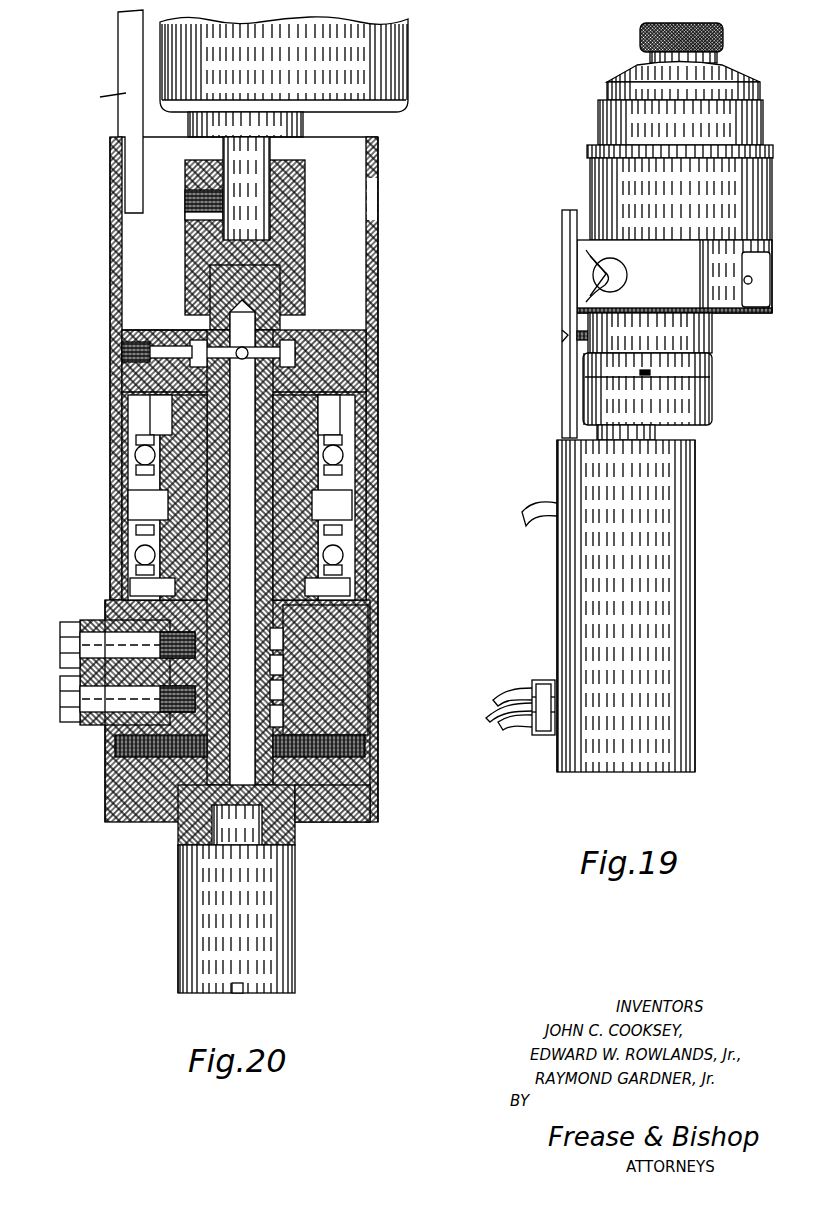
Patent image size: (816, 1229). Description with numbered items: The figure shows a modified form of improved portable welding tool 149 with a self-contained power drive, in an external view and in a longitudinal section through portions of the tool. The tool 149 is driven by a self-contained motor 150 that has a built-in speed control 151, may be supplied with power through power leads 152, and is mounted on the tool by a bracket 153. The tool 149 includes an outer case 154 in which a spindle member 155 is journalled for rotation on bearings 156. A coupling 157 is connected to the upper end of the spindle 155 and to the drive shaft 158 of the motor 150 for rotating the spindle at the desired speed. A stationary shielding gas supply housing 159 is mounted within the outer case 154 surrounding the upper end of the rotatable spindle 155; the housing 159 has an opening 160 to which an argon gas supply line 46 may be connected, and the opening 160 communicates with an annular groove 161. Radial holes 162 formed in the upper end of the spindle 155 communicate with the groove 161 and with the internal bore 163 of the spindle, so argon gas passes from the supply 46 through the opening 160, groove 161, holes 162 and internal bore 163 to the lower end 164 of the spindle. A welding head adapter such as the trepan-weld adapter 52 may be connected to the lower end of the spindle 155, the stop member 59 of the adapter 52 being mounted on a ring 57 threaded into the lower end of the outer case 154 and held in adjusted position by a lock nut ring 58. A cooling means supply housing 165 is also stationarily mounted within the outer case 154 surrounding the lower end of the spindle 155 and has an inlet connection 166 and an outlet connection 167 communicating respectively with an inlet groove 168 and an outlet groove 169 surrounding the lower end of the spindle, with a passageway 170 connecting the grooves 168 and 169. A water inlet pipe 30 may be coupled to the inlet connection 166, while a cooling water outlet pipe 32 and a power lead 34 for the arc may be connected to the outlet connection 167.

In FIG. 20, the welding tool 149 is at (382, 493).
In FIG. 19, the welding tool 149 is at (698, 527).
In FIG. 20, the motor 150 is at (400, 77).
In FIG. 19, the motor 150 is at (598, 177).
In FIG. 19, the speed control 151 is at (626, 74).
In FIG. 19, the power leads 152 is at (596, 261).
In FIG. 20, the bracket 153 is at (127, 94).
In FIG. 19, the bracket 153 is at (567, 299).
In FIG. 20, the outer case 154 is at (378, 267).
In FIG. 19, the outer case 154 is at (700, 667).
In FIG. 20, the spindle member 155 is at (264, 543).
In FIG. 20, the bearings 156 is at (357, 443).
In FIG. 20, the coupling 157 is at (296, 227).
In FIG. 20, the drive shaft 158 is at (265, 149).
In FIG. 20, the shielding gas supply housing 159 is at (352, 355).
In FIG. 20, the opening 160 is at (158, 341).
In FIG. 20, the annular groove 161 is at (176, 364).
In FIG. 20, the radial holes 162 is at (233, 326).
In FIG. 20, the internal bore 163 is at (236, 445).
In FIG. 20, the lower end 164 is at (244, 802).
In FIG. 20, the cooling means supply housing 165 is at (296, 667).
In FIG. 20, the inlet connection 166 is at (64, 717).
In FIG. 19, the inlet connection 166 is at (538, 733).
In FIG. 20, the outlet connection 167 is at (62, 647).
In FIG. 19, the outlet connection 167 is at (540, 681).
In FIG. 20, the inlet groove 168 is at (286, 699).
In FIG. 20, the outlet groove 169 is at (284, 644).
In FIG. 20, the passageway 170 is at (281, 677).
In FIG. 20, the lock nut ring 58 is at (372, 815).
In FIG. 20, the ring 57 is at (326, 825).
In FIG. 20, the stop member 59 is at (182, 907).
In FIG. 20, the trepan-weld adapter 52 is at (300, 916).
In FIG. 19, the argon gas supply line 46 is at (532, 519).
In FIG. 19, the cooling water outlet pipe 32 is at (513, 689).
In FIG. 19, the power lead 34 is at (490, 707).
In FIG. 19, the water inlet pipe 30 is at (503, 729).